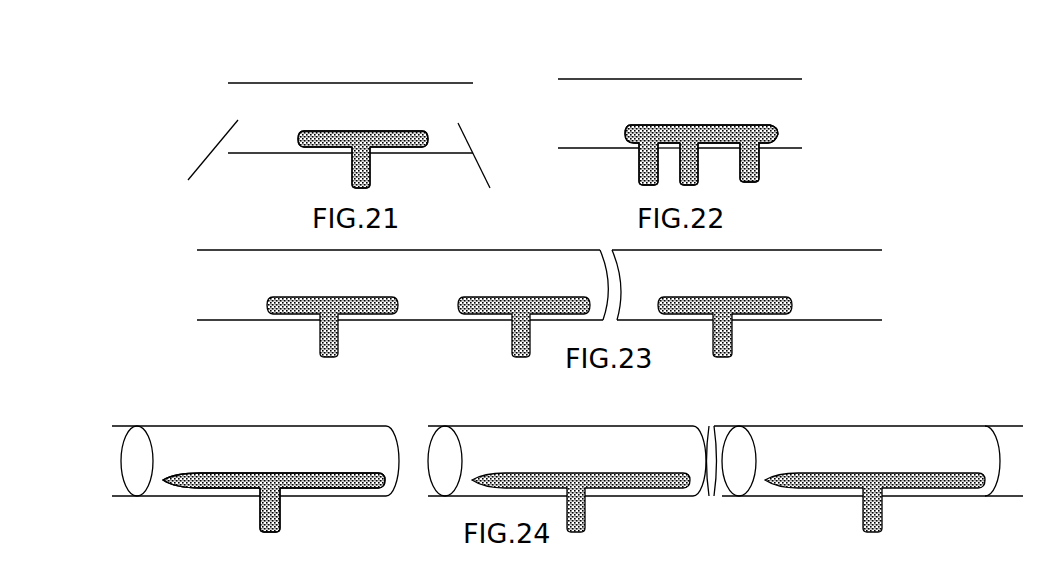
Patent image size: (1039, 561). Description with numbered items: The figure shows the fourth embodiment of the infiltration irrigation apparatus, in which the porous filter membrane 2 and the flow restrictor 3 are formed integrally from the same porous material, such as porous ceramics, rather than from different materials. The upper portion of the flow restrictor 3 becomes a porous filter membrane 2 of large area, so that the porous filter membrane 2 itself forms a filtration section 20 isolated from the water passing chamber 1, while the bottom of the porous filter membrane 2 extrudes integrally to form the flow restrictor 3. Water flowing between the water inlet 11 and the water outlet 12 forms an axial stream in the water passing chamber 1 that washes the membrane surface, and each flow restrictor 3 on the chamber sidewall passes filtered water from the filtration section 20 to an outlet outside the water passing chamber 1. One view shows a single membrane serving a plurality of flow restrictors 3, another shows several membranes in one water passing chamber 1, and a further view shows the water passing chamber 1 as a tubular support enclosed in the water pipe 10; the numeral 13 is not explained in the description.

In FIG. 21, the water passing chamber 1 is at (402, 45).
In FIG. 22, the water passing chamber 1 is at (687, 93).
In FIG. 24, the water passing chamber 1 is at (202, 442).
In FIG. 21, the porous filter membrane 2 is at (353, 114).
In FIG. 22, the porous filter membrane 2 is at (717, 121).
In FIG. 24, the porous filter membrane 2 is at (574, 468).
In FIG. 21, the flow restrictor 3 is at (352, 162).
In FIG. 22, the flow restrictor 3 is at (639, 158).
In FIG. 24, the flow restrictor 3 is at (260, 507).
In FIG. 21, the filtration section 20 is at (402, 147).
In FIG. 22, the filtration section 20 is at (773, 138).
In FIG. 24, the filtration section 20 is at (308, 488).
In FIG. 24, the water pipe 10 is at (542, 449).
In FIG. 24, the water inlet 11 is at (122, 467).
In FIG. 24, the water outlet 12 is at (398, 467).
In FIG. 24, the anchor leg portion 13 is at (248, 552).